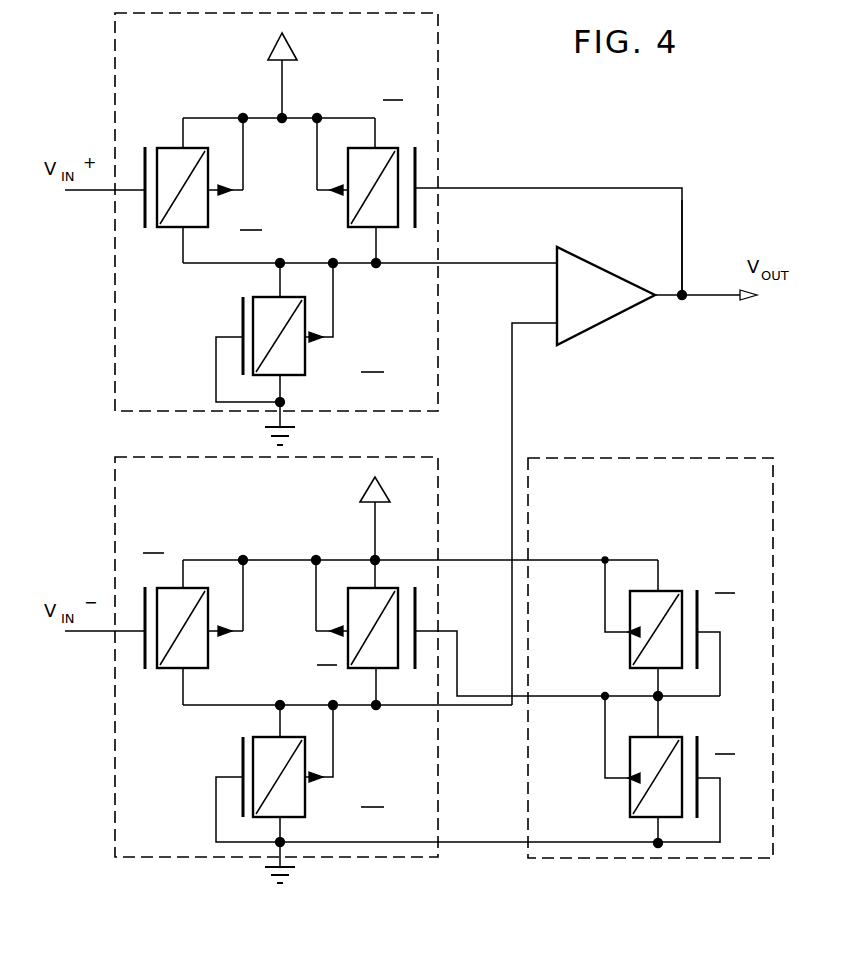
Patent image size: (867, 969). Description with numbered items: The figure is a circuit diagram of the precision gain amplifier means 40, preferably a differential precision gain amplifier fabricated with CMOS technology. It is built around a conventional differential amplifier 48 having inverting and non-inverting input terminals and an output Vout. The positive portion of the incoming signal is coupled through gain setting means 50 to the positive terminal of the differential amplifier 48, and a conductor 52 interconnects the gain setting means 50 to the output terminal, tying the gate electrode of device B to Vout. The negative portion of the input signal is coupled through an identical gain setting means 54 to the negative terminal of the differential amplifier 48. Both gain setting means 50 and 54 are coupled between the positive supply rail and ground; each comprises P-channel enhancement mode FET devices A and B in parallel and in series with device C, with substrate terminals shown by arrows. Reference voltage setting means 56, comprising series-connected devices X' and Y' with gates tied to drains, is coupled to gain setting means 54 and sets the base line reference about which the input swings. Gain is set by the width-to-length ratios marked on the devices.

The precision gain amplifier means 40 is at (642, 176).
The differential amplifier 48 is at (605, 322).
The gain setting means 50 is at (440, 52).
The conductor 52 is at (685, 213).
The gain setting means 54 is at (440, 482).
The reference voltage setting means 56 is at (688, 458).